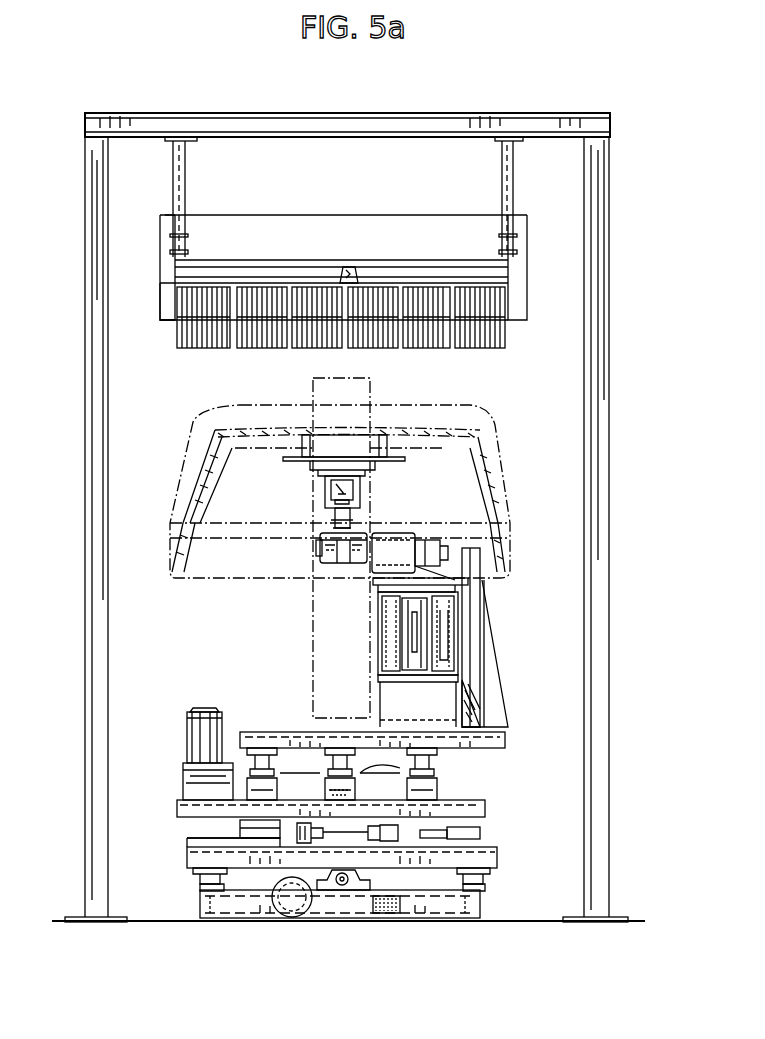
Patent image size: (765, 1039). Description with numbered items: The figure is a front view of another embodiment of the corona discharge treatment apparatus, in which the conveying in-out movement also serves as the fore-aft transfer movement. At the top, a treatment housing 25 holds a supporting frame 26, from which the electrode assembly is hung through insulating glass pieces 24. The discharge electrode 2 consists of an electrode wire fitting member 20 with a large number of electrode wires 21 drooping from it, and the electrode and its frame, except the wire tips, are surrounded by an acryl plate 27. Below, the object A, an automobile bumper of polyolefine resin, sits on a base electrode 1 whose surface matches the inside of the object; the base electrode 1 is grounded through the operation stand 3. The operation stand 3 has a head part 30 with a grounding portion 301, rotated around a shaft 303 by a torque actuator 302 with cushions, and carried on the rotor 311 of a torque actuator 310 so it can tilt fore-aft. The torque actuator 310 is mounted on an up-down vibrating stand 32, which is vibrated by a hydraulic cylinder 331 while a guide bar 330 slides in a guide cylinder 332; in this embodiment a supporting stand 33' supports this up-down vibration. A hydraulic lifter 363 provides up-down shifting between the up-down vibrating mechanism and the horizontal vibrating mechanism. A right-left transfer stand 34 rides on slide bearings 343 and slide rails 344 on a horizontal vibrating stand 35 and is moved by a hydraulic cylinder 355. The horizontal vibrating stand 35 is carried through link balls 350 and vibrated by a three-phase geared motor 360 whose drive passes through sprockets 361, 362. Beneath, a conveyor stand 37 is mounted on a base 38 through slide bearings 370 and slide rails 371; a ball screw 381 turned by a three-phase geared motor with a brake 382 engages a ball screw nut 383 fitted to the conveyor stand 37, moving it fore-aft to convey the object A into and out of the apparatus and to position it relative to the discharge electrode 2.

The base electrode 1 is at (472, 442).
The discharge electrode 2 is at (316, 344).
The operation stand 3 is at (515, 608).
The electrode wire fitting member 20 is at (340, 283).
The electrode wires 21 is at (192, 350).
The insulating glass pieces 24 is at (185, 243).
The treatment housing 25 is at (598, 316).
The supporting frame 26 is at (175, 177).
The acryl plate 27 is at (162, 285).
The head part 30 is at (288, 461).
The grounding portion 301 is at (357, 448).
The torque actuator with cushions 302 is at (327, 492).
The shaft 303 is at (343, 470).
The torque actuator with 3 point stop cushions 310 is at (397, 548).
The rotor 311 is at (320, 560).
The up-down vibrating stand 32 is at (375, 582).
The supporting stand for up-down vibration 33' is at (464, 659).
The guide bar 330 is at (560, 637).
The hydraulic cylinder 331 is at (418, 655).
The guide cylinder 332 is at (488, 596).
The right-left transfer stand 34 is at (476, 805).
The slide bearings 343 is at (240, 830).
The slide rails 344 is at (190, 838).
The horizontal vibrating stand 35 is at (502, 745).
The link balls 350 is at (382, 774).
The hydraulic cylinder 355 is at (466, 830).
The three-phase geared motor 360 is at (205, 710).
The sprocket 361 is at (190, 778).
The sprocket 362 is at (428, 784).
The hydraulic lifter 363 is at (472, 700).
The conveyor stand 37 is at (498, 858).
The slide bearings 370 is at (485, 880).
The slide rails 371 is at (485, 890).
The base 38 is at (443, 905).
The ball screw 381 is at (345, 890).
The three-phase geared motor with a brake 382 is at (285, 882).
The ball screw nut 383 is at (385, 903).
The object A is at (470, 405).